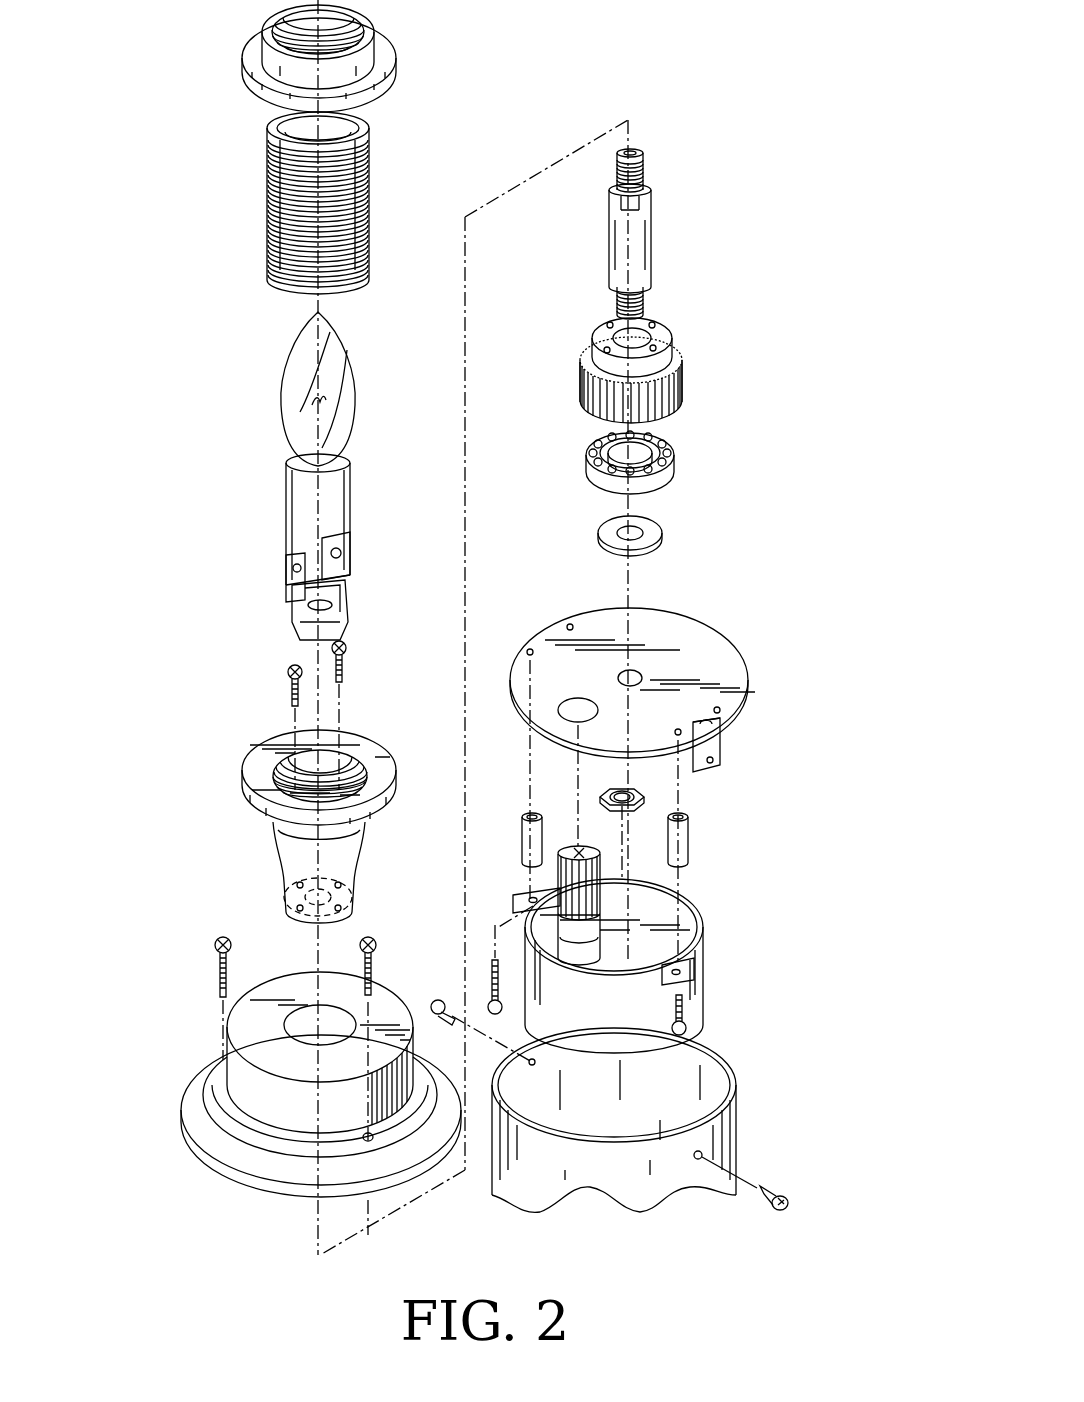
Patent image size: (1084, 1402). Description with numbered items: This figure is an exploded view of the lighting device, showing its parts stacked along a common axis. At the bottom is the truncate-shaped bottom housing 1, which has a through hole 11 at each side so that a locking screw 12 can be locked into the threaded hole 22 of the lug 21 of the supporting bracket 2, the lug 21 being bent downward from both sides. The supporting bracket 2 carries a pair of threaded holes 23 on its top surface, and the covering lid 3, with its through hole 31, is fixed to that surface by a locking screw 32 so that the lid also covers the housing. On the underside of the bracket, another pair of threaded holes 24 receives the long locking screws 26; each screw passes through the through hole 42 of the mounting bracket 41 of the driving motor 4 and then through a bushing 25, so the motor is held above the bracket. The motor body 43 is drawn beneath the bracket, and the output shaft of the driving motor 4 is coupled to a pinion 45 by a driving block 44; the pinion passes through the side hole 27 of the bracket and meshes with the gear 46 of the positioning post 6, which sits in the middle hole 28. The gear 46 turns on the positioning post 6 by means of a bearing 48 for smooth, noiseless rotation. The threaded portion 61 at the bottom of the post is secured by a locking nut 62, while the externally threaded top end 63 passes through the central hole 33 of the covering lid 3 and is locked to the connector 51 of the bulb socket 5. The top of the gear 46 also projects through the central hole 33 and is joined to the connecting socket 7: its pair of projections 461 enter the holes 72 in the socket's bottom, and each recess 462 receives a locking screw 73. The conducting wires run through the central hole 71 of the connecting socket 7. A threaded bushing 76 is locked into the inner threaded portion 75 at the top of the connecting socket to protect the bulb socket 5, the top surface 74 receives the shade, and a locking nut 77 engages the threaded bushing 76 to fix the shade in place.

The bottom housing 1 is at (669, 1120).
The through hole 11 is at (703, 1154).
The locking screw 12 is at (785, 1196).
The supporting bracket 2 is at (642, 679).
The lug 21 is at (722, 745).
The threaded hole 22 is at (714, 763).
The threaded holes 23 is at (720, 706).
The threaded holes 24 is at (682, 728).
The bushing 25 is at (690, 850).
The long locking screw 26 is at (690, 1015).
The side hole 27 is at (560, 712).
The middle hole 28 is at (640, 672).
The covering lid 3 is at (307, 1067).
The through hole 31 is at (374, 1140).
The locking screw 32 is at (372, 968).
The central hole 33 is at (300, 1018).
The driving motor 4 is at (630, 944).
The mounting bracket 41 is at (526, 893).
The through hole 42 is at (700, 966).
The top face of motor 43 is at (680, 910).
The driving block 44 is at (535, 918).
The pinion 45 is at (595, 890).
The gear 46 is at (631, 337).
The projections 461 is at (658, 346).
The recesses 462 is at (655, 323).
The bearing 48 is at (675, 470).
The bulb socket 5 is at (300, 510).
The connector 51 is at (343, 617).
The positioning post 6 is at (643, 227).
The threaded portion 61 is at (645, 295).
The locking nut 62 is at (646, 796).
The top end 63 is at (644, 175).
The connecting socket 7 is at (328, 782).
The central hole 71 is at (290, 870).
The holes 72 is at (285, 898).
The locking screw 73 is at (300, 702).
The top surface 74 is at (392, 790).
The inner threaded portion 75 is at (340, 752).
The threaded bushing 76 is at (290, 212).
The locking nut 77 is at (262, 72).